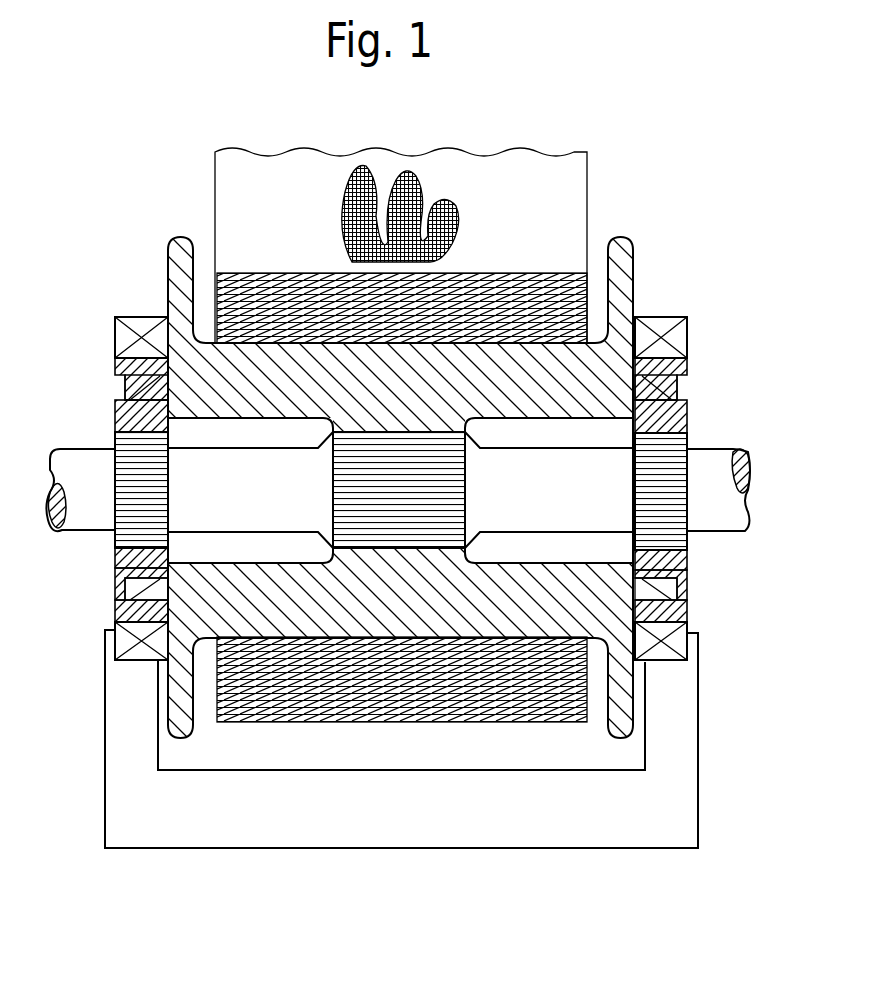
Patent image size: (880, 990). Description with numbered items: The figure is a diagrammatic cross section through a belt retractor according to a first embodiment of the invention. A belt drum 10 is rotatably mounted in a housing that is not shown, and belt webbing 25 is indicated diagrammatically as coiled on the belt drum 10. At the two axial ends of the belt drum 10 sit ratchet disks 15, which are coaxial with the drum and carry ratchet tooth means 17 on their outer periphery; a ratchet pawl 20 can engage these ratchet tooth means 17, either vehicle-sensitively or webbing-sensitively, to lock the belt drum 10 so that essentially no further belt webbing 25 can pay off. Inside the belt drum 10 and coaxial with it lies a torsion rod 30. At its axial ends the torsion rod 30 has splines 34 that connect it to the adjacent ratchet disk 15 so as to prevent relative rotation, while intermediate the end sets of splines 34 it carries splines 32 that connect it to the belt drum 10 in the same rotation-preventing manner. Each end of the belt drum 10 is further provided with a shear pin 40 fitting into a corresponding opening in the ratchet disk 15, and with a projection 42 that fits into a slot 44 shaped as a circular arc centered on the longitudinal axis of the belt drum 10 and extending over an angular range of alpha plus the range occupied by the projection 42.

The belt drum 10 is at (633, 263).
The ratchet disks 15 is at (125, 415).
The ratchet tooth means 17 is at (124, 338).
The ratchet pawl 20 is at (583, 818).
The belt webbing 25 is at (527, 182).
The torsion rod 30 is at (737, 518).
The splines 32 is at (410, 523).
The splines 34 is at (127, 505).
The shear pin 40 is at (128, 388).
The projection 42 is at (128, 602).
The slot 44 is at (125, 584).